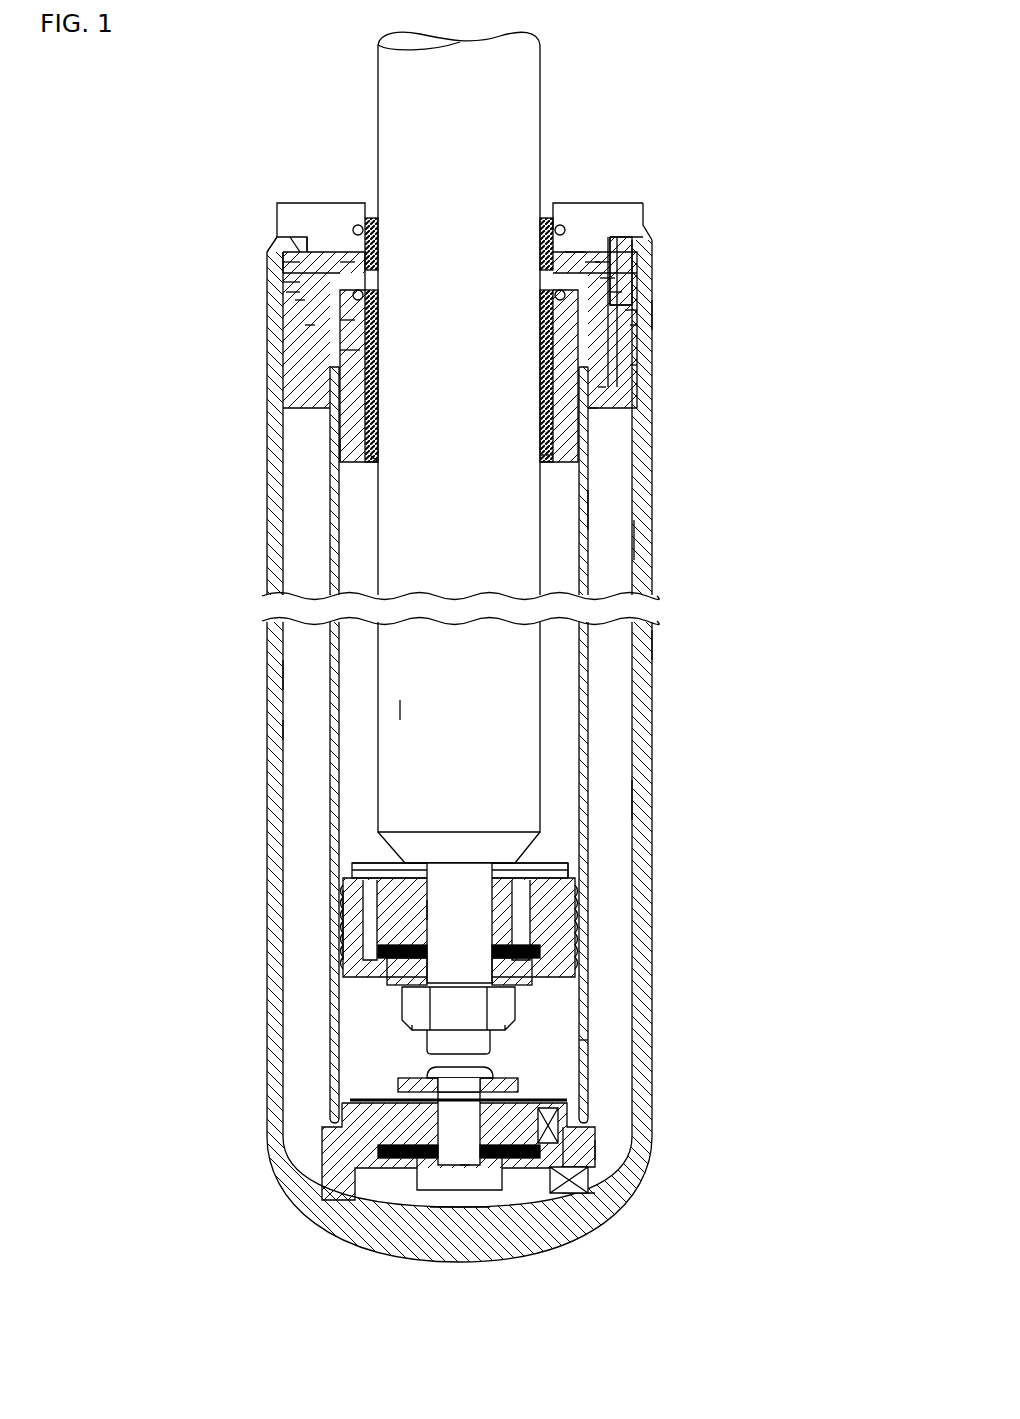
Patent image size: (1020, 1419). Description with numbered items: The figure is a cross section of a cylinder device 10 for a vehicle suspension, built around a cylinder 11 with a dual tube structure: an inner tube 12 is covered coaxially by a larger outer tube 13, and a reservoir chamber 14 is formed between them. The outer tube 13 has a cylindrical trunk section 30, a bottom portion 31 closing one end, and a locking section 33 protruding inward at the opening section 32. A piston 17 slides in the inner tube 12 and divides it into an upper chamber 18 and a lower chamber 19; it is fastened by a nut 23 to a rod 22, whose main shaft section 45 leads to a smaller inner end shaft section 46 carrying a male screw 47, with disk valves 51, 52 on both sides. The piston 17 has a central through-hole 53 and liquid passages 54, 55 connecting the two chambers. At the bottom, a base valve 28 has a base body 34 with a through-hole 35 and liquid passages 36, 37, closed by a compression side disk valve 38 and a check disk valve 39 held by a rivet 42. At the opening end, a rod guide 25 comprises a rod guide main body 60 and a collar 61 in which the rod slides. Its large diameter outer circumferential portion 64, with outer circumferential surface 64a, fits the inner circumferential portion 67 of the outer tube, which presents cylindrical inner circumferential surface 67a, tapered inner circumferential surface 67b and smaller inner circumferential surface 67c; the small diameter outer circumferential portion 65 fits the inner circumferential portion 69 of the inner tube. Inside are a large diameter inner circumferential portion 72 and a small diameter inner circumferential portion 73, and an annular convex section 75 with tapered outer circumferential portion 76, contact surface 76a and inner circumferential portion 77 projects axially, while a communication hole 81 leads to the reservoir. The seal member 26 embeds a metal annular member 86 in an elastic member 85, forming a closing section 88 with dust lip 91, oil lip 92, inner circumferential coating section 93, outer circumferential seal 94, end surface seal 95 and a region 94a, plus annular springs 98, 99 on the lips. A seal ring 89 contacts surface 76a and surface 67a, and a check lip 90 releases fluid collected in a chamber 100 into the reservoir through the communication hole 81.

The cylinder device 10 is at (764, 158).
The cylinder 11 is at (662, 646).
The inner tube 12 is at (598, 510).
The outer tube 13 is at (658, 572).
The reservoir chamber 14 is at (616, 540).
The piston 17 is at (576, 930).
The upper chamber 18 is at (560, 750).
The lower chamber 19 is at (560, 1045).
The rod 22 is at (374, 60).
The nut 23 is at (410, 1003).
The rod guide 25 is at (362, 480).
The seal member 26 is at (551, 208).
The base valve 28 is at (316, 1144).
The trunk section 30 is at (650, 800).
The bottom portion 31 is at (465, 1232).
The opening section 32 is at (575, 215).
The locking section 33 is at (290, 222).
The base body 34 is at (590, 1150).
The through-hole 35 is at (446, 1140).
The liquid passage 36 is at (513, 1123).
The liquid passage 37 is at (560, 1130).
The disk valve 38 is at (378, 1153).
The disk valve 39 is at (520, 1088).
The rivet 42 is at (485, 1180).
The main shaft section 45 is at (520, 698).
The inner end shaft section 46 is at (472, 928).
The male screw 47 is at (495, 1042).
The disk valve 51 is at (360, 870).
The disk valve 52 is at (385, 965).
The through-hole 53 is at (345, 902).
The liquid passage 54 is at (438, 920).
The liquid passage 55 is at (566, 885).
The rod guide main body 60 is at (350, 472).
The collar 61 is at (373, 468).
The large diameter outer circumferential portion 64 is at (640, 328).
The outer circumferential surface 64a is at (635, 312).
The small diameter outer circumferential portion 65 is at (595, 425).
The inner circumferential portion 67 is at (300, 732).
The inner circumferential surface 67a is at (360, 318).
The inner circumferential surface 67b is at (310, 330).
The inner circumferential surface 67c is at (302, 306).
The inner circumferential portion 69 is at (355, 660).
The large diameter inner circumferential portion 72 is at (614, 340).
The small diameter inner circumferential portion 73 is at (552, 440).
The annular convex section 75 is at (640, 248).
The outer circumferential portion 76 is at (610, 278).
The outer circumferential surface 76a is at (300, 280).
The inner circumferential portion 77 is at (615, 238).
The communication hole 81 is at (637, 365).
The elastic member 85 is at (350, 242).
The annular member 86 is at (303, 243).
The closing section 88 is at (262, 245).
The seal ring 89 is at (293, 293).
The check lip 90 is at (592, 250).
The dust lip 91 is at (355, 226).
The oil lip 92 is at (370, 395).
The inner circumferential coating section 93 is at (371, 220).
The outer circumferential seal 94 is at (300, 262).
The seal portion 94a is at (600, 262).
The end surface seal 95 is at (618, 292).
The annular spring 98 is at (315, 248).
The annular spring 99 is at (362, 350).
The chamber 100 is at (605, 388).